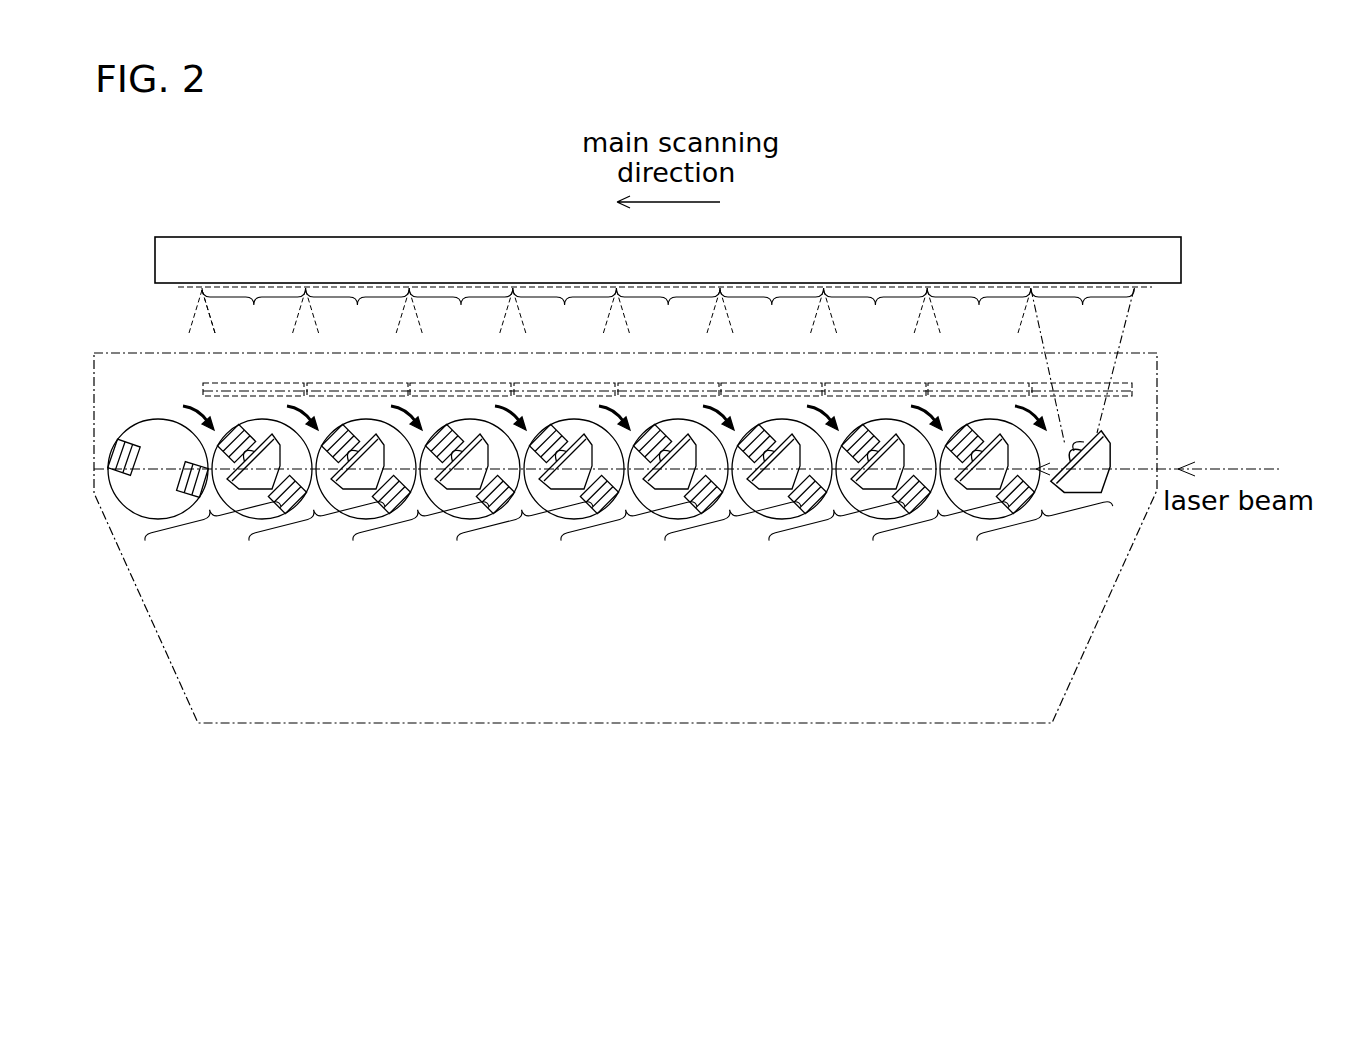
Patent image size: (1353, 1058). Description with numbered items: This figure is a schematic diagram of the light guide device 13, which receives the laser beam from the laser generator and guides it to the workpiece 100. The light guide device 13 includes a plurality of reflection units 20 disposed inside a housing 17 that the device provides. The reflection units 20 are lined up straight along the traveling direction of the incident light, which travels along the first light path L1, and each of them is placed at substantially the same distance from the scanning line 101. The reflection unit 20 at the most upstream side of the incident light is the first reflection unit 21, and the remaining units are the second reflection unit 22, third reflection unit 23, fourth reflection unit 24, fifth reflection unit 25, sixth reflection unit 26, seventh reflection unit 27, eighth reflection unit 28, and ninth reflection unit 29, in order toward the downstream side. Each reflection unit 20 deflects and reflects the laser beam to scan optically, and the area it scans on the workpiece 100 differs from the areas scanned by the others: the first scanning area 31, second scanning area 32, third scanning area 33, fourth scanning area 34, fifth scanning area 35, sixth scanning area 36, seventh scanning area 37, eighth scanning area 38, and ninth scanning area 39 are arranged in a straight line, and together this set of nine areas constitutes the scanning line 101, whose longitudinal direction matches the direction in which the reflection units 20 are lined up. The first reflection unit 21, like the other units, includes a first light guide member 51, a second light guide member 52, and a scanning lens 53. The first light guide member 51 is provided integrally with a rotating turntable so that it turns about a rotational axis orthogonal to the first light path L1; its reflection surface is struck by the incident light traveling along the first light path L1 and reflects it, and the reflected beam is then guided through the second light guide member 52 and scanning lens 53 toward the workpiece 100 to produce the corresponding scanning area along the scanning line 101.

The light guide device 13 is at (624, 788).
The housing 17 is at (240, 725).
The reflection units 20 is at (610, 508).
The first reflection unit 21 is at (1026, 492).
The second reflection unit 22 is at (922, 492).
The third reflection unit 23 is at (818, 492).
The fourth reflection unit 24 is at (714, 492).
The fifth reflection unit 25 is at (610, 492).
The sixth reflection unit 26 is at (506, 492).
The seventh reflection unit 27 is at (402, 492).
The eighth reflection unit 28 is at (298, 492).
The ninth reflection unit 29 is at (194, 492).
The first scanning area 31 is at (1076, 318).
The second scanning area 32 is at (972, 318).
The third scanning area 33 is at (869, 318).
The fourth scanning area 34 is at (765, 318).
The fifth scanning area 35 is at (661, 318).
The sixth scanning area 36 is at (558, 318).
The seventh scanning area 37 is at (454, 318).
The eighth scanning area 38 is at (351, 318).
The ninth scanning area 39 is at (247, 318).
The first light guide member 51 is at (1113, 497).
The second light guide member 52 is at (1103, 478).
The scanning lens 53 is at (1122, 384).
The workpiece 100 is at (1023, 252).
The scanning line 101 is at (1148, 288).
The first light path L1 is at (1146, 468).